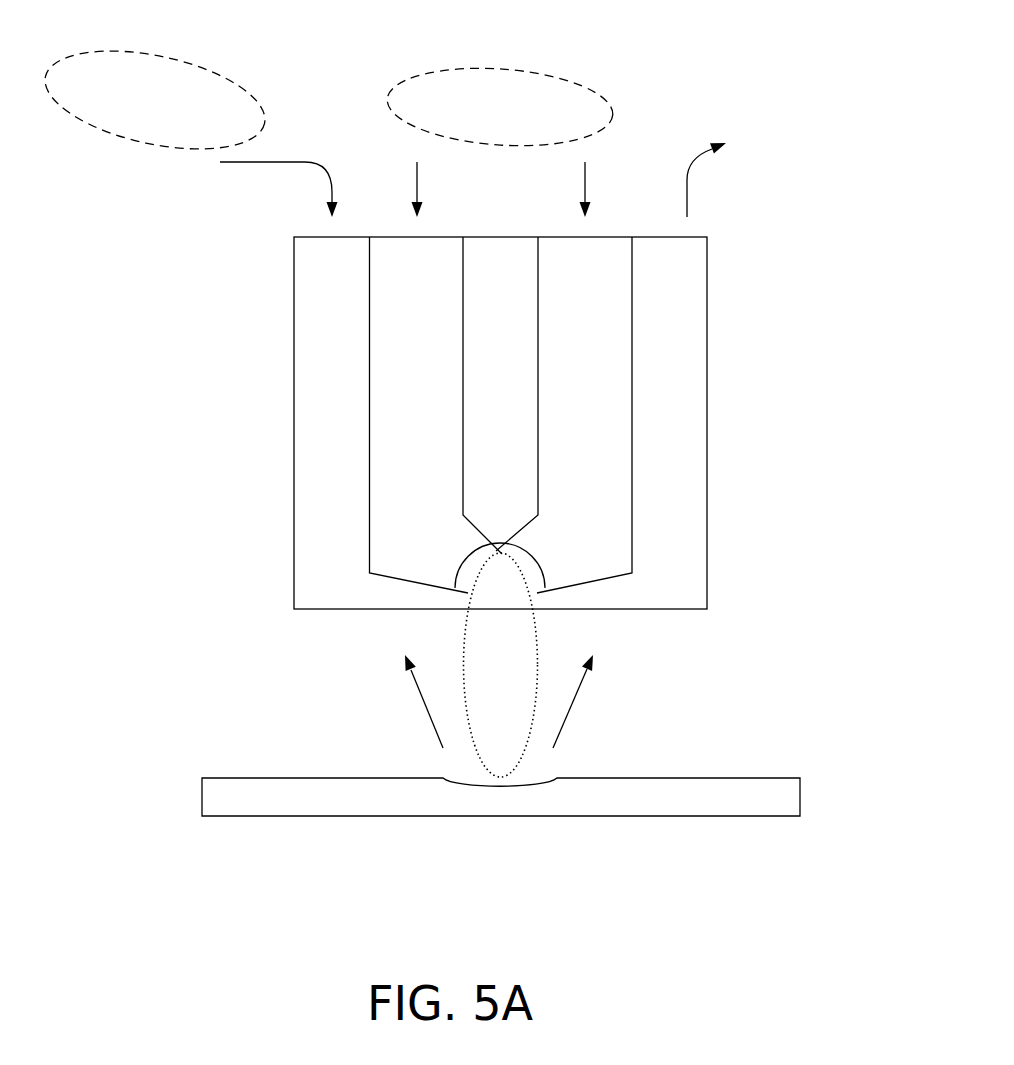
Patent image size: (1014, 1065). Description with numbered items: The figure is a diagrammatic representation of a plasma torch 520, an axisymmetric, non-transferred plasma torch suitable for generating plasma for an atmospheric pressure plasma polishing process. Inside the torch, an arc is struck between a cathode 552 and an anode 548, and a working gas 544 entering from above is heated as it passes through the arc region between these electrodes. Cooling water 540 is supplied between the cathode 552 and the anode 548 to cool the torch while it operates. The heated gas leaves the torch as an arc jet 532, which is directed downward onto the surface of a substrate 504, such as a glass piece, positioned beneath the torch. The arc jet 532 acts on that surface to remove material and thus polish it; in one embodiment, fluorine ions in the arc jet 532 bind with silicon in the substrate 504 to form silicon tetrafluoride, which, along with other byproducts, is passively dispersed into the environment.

The plasma torch 520 is at (796, 50).
The cooling water 540 is at (118, 50).
The working gas 544 is at (412, 76).
The anode 548 is at (294, 465).
The cathode 552 is at (463, 428).
The arc jet 532 is at (465, 640).
The substrate 504 is at (682, 817).